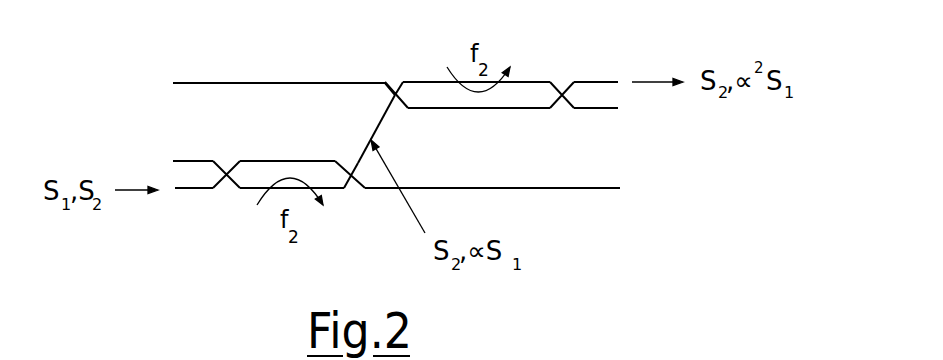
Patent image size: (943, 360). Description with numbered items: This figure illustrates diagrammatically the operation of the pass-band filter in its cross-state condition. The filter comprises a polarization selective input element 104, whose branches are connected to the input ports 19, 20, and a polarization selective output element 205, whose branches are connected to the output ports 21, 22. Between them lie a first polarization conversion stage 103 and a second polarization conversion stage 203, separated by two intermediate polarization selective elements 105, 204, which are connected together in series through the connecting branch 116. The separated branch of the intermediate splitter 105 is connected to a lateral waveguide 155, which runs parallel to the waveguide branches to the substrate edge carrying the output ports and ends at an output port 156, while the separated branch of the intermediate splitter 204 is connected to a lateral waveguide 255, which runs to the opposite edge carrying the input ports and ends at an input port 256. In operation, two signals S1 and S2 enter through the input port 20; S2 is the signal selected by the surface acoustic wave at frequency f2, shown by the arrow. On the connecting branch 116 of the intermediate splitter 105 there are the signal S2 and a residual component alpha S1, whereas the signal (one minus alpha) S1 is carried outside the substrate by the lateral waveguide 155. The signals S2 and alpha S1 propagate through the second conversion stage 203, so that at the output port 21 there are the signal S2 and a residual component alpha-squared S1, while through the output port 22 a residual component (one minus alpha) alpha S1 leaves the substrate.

The input port 19 is at (175, 161).
The input port 20 is at (175, 188).
The output port 21 is at (618, 82).
The output port 22 is at (618, 108).
The polarization conversion stage 103 is at (293, 151).
The polarization selective input element 104 is at (227, 189).
The intermediate polarization selective element 105 is at (350, 189).
The connecting branch 116 is at (383, 125).
The lateral waveguide 155 is at (543, 188).
The output port 156 is at (620, 188).
The polarization conversion stage 203 is at (492, 117).
The intermediate polarization selective element 204 is at (395, 81).
The polarization selective output element 205 is at (562, 81).
The lateral waveguide 255 is at (283, 83).
The input port 256 is at (173, 83).